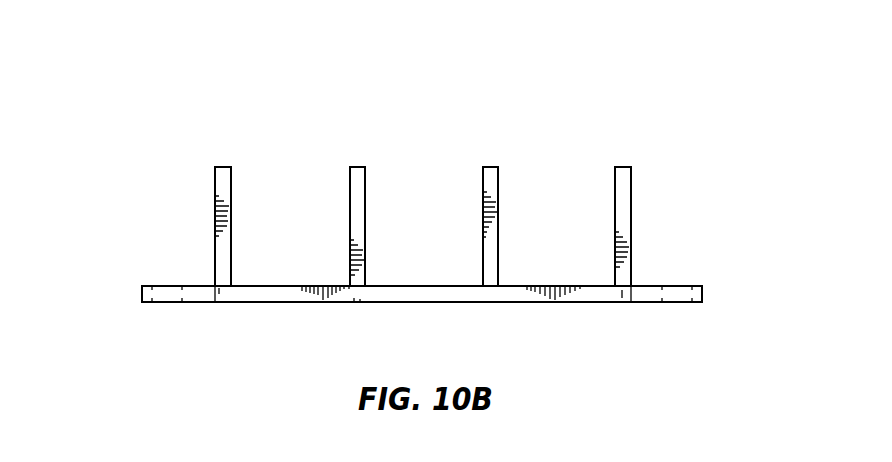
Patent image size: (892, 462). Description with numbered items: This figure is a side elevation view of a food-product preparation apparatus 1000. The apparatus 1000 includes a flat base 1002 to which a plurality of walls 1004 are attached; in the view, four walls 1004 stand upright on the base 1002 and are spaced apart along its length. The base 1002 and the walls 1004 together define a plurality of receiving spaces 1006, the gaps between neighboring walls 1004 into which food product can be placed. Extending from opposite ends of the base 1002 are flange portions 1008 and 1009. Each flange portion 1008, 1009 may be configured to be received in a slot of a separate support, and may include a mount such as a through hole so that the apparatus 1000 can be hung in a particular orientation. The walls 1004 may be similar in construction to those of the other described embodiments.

The food-product preparation apparatus 1000 is at (695, 95).
The base 1002 is at (648, 287).
The walls 1004 is at (357, 188).
The receiving spaces 1006 is at (416, 208).
The flange portion 1008 is at (142, 293).
The flange portion 1009 is at (702, 292).